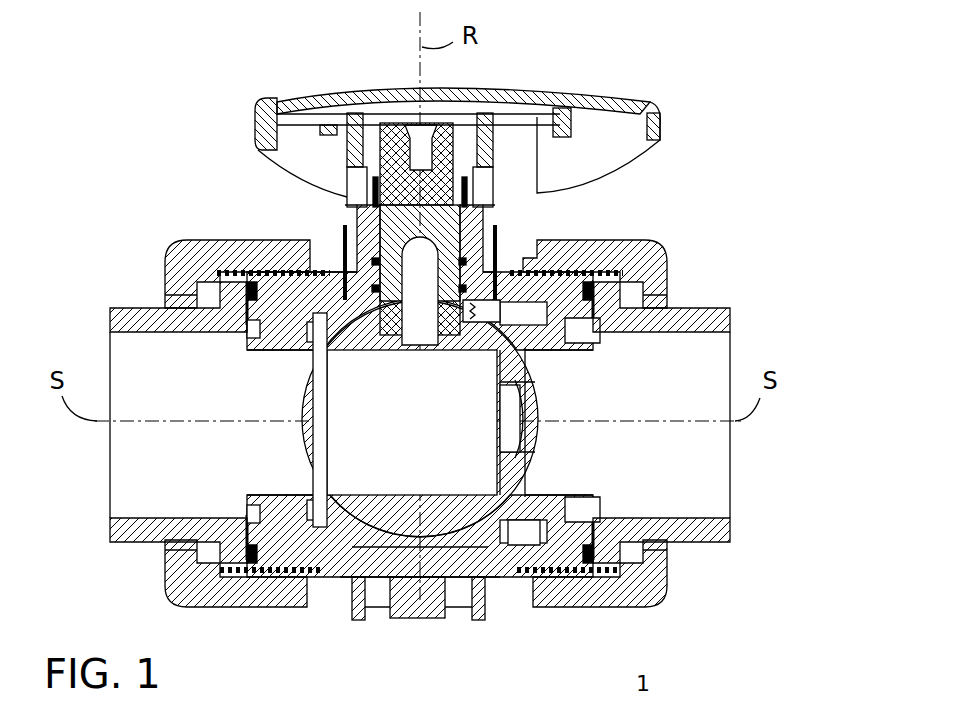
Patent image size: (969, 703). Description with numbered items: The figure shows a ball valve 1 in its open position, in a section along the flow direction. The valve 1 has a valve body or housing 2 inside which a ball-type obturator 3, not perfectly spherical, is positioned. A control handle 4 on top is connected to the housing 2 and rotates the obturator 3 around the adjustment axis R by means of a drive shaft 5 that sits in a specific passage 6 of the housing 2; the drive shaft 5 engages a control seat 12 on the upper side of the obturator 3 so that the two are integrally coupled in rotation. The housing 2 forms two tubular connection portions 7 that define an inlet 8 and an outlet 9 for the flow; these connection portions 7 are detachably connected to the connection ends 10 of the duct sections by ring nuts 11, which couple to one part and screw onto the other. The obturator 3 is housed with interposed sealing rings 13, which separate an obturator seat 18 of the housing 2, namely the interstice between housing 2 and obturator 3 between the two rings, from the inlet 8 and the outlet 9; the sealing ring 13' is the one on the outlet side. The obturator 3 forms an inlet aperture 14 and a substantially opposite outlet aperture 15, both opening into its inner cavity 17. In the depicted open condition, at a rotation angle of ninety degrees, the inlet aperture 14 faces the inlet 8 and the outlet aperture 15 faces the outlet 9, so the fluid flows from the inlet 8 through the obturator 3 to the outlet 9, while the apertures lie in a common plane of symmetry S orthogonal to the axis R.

The ball valve 1 is at (655, 232).
The valve body 2 is at (482, 562).
The obturator 3 is at (440, 523).
The control handle 4 is at (580, 90).
The drive shaft 5 is at (478, 225).
The passage 6 is at (480, 245).
The tubular connection portion 7 is at (257, 243).
The inlet 8 is at (262, 404).
The outlet 9 is at (559, 404).
The connection end 10 is at (143, 308).
The ring nut 11 is at (190, 247).
The control seat 12 is at (350, 310).
The sealing ring 13 is at (410, 502).
The sealing ring 13' is at (528, 585).
The inlet aperture 14 is at (330, 470).
The outlet aperture 15 is at (520, 433).
The inner cavity 17 is at (453, 404).
The obturator seat 18 is at (355, 540).